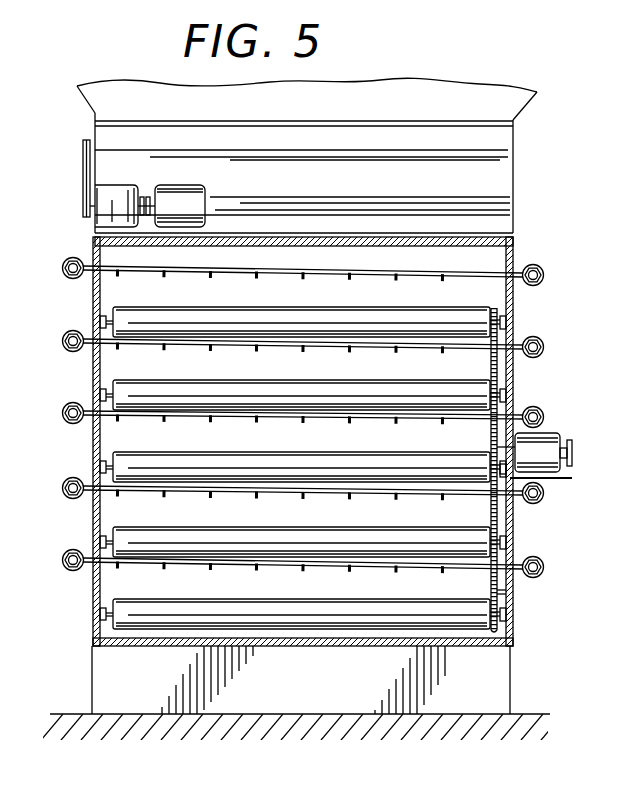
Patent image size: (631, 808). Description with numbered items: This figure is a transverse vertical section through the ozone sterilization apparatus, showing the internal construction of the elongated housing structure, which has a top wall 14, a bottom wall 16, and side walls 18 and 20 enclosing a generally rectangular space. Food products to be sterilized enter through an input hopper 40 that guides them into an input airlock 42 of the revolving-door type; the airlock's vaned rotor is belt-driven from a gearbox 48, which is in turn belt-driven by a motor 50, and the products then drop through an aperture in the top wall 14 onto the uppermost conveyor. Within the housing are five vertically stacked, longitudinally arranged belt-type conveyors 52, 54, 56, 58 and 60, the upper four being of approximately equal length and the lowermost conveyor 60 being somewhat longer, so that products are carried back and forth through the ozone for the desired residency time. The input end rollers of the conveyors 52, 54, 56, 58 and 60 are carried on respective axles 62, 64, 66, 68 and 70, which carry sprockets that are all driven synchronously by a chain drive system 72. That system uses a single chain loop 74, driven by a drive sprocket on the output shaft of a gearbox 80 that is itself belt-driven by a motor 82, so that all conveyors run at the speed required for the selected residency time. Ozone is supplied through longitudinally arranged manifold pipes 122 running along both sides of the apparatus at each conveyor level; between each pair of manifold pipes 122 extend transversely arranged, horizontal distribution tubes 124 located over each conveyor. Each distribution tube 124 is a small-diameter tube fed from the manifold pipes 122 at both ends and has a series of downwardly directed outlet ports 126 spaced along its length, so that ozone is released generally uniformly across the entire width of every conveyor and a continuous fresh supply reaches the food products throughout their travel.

The input hopper 40 is at (527, 106).
The input airlock 42 is at (495, 170).
The top wall 14 is at (508, 234).
The bottom wall 16 is at (291, 648).
The side wall 18 is at (93, 299).
The side wall 20 is at (515, 303).
The gearbox 48 is at (124, 177).
The motor 50 is at (190, 186).
The first conveyor 52 is at (225, 306).
The second conveyor 54 is at (362, 379).
The third conveyor 56 is at (370, 451).
The fourth conveyor 58 is at (380, 526).
The fifth conveyor 60 is at (370, 598).
The axle 62 is at (492, 322).
The axle 64 is at (492, 395).
The axle 66 is at (492, 467).
The axle 68 is at (492, 542).
The axle 70 is at (492, 613).
The chain drive system 72 is at (513, 404).
The chain loop 74 is at (506, 592).
The gearbox 80 is at (549, 434).
The motor 82 is at (561, 446).
The manifold pipe 122 is at (72, 478).
The distribution tube 124 is at (280, 280).
The outlet port 126 is at (356, 280).